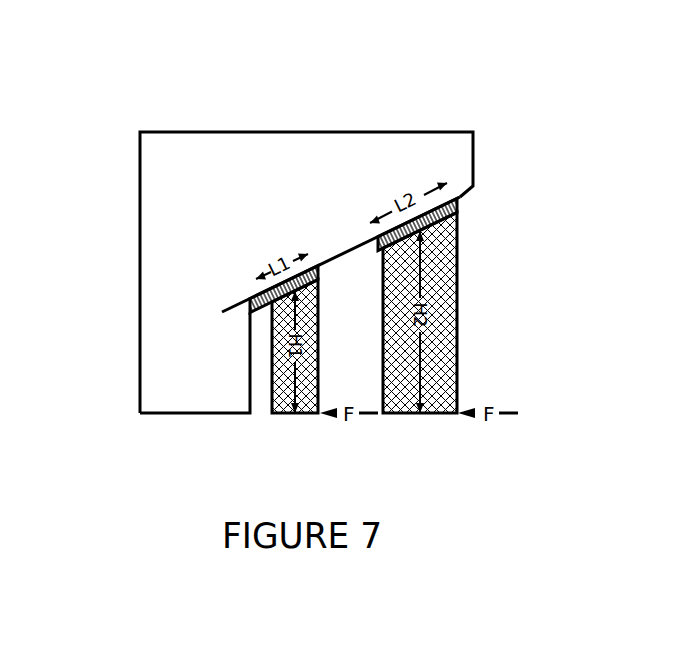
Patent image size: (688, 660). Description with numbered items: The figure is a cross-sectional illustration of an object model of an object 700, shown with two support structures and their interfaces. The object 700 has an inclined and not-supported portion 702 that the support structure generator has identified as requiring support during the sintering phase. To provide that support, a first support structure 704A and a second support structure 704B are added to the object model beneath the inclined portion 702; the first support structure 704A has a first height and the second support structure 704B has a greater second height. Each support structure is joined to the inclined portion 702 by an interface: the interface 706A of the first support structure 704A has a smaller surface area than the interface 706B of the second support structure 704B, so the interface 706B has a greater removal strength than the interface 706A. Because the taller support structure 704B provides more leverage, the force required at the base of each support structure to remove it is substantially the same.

The object 700 is at (148, 221).
The inclined and not-supported portion 702 is at (328, 232).
The first support structure 704A is at (286, 412).
The second support structure 704B is at (400, 413).
The interface of the first support structure 706A is at (270, 298).
The interface of the second support structure 706B is at (452, 217).